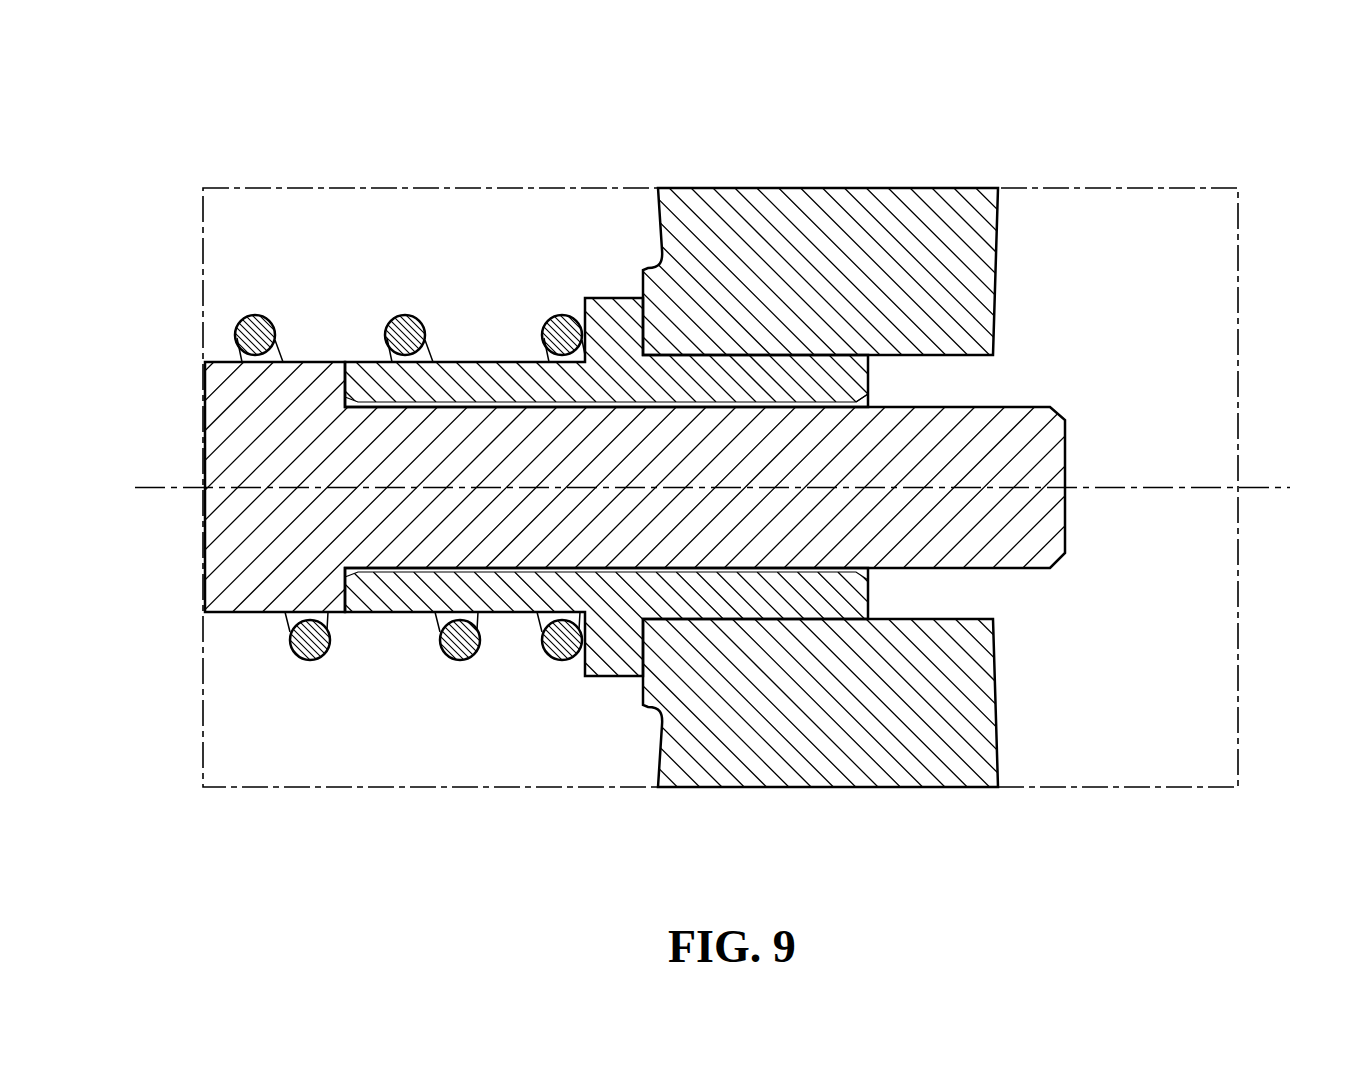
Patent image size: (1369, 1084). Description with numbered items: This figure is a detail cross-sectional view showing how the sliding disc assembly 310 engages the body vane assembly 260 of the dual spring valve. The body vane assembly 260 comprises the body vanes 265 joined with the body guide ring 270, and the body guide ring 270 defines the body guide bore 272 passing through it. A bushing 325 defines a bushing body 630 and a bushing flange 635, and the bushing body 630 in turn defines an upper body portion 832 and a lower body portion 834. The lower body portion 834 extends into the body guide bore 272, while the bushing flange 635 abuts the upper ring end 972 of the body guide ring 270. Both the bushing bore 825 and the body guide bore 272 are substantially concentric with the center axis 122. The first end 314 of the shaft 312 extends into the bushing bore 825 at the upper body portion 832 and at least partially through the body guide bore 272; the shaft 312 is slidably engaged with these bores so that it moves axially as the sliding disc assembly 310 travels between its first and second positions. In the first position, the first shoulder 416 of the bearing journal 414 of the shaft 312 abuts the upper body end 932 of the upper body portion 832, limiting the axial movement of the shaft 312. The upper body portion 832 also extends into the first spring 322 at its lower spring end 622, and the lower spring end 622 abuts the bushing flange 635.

The center axis 122 is at (1155, 487).
The body vane assembly 260 is at (720, 465).
The body vanes 265 is at (826, 498).
The body guide ring 270 is at (737, 657).
The body guide bore 272 is at (938, 596).
The sliding disc assembly 310 is at (644, 463).
The shaft 312 is at (644, 362).
The first end 314 is at (644, 362).
The first spring 322 is at (248, 337).
The bushing 325 is at (607, 715).
The bearing journal 414 is at (228, 577).
The first shoulder 416 is at (604, 259).
The lower spring end 622 is at (558, 340).
The bushing body 630 is at (604, 259).
The bushing flange 635 is at (612, 322).
The bushing bore 825 is at (868, 400).
The upper body portion 832 is at (607, 715).
The lower body portion 834 is at (607, 715).
The upper body end 932 is at (342, 586).
The upper ring end 972 is at (637, 642).